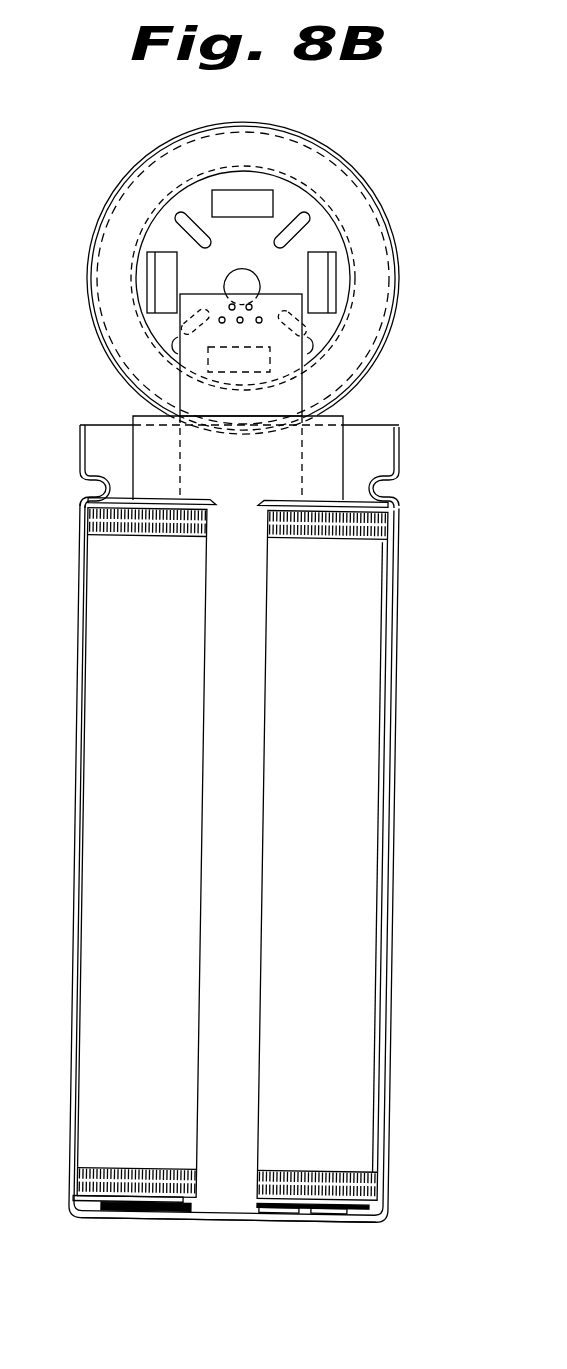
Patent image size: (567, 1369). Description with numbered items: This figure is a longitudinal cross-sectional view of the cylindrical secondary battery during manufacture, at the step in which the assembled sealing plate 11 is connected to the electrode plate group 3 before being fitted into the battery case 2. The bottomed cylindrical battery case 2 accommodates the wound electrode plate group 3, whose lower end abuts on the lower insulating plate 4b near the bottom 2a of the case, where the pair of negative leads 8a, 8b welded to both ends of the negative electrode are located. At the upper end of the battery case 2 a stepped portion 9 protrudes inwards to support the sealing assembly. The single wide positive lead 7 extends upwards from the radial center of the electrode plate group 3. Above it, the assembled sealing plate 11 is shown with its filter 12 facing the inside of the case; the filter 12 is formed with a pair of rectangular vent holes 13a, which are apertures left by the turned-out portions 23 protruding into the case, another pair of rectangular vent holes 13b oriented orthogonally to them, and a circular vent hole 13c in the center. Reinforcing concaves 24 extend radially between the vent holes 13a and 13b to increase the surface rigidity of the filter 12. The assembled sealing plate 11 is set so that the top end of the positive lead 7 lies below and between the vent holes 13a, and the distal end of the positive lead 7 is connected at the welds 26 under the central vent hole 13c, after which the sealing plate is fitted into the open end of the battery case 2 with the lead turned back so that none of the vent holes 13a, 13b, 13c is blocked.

The battery case 2 is at (78, 918).
The bottom of battery case 2a is at (205, 1218).
The electrode plate group 3 is at (333, 850).
The lower insulating plate 4b is at (92, 1207).
The positive lead 7 is at (203, 400).
The negative lead 8a is at (148, 1215).
The negative lead 8b is at (325, 1215).
The stepped portion 9 is at (98, 488).
The assembled sealing plate 11 is at (123, 178).
The filter 12 is at (315, 235).
The vent hole 13a is at (320, 298).
The vent hole 13b is at (240, 200).
The vent hole 13c is at (242, 282).
The turned-out portion 23 is at (328, 280).
The reinforcing concave 24 is at (185, 225).
The weld 26 is at (270, 322).